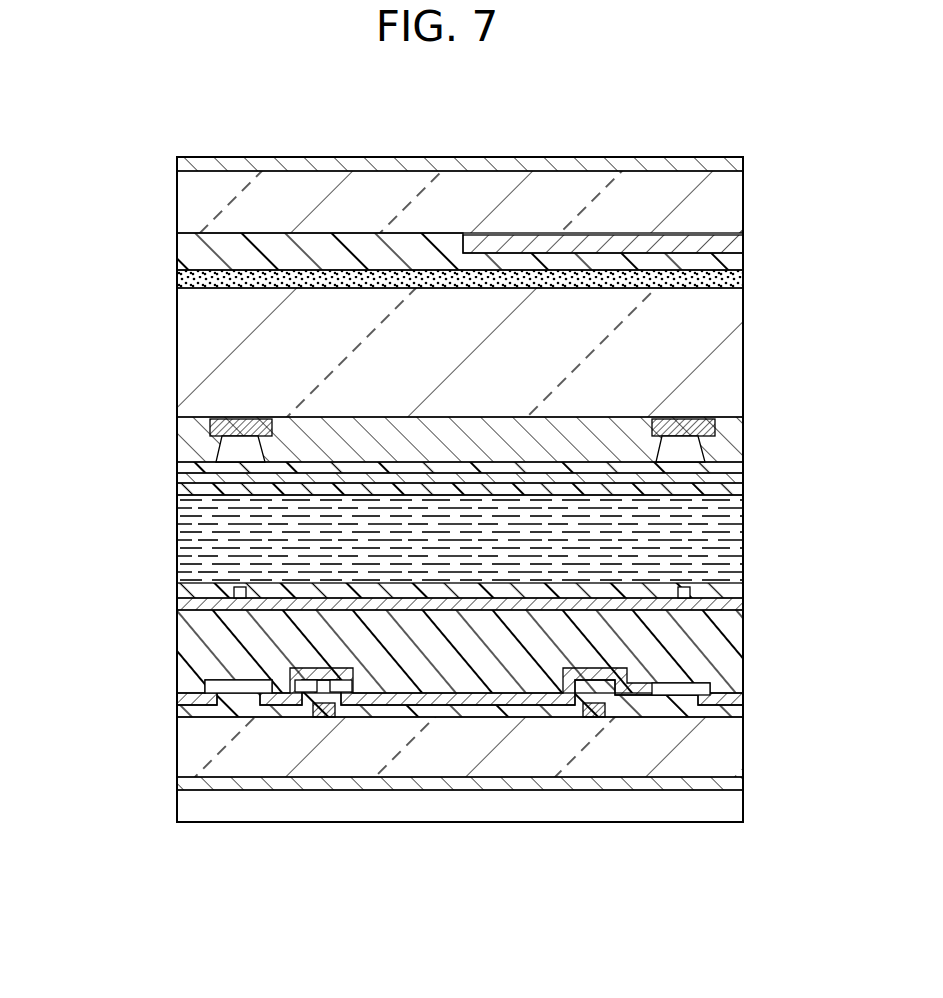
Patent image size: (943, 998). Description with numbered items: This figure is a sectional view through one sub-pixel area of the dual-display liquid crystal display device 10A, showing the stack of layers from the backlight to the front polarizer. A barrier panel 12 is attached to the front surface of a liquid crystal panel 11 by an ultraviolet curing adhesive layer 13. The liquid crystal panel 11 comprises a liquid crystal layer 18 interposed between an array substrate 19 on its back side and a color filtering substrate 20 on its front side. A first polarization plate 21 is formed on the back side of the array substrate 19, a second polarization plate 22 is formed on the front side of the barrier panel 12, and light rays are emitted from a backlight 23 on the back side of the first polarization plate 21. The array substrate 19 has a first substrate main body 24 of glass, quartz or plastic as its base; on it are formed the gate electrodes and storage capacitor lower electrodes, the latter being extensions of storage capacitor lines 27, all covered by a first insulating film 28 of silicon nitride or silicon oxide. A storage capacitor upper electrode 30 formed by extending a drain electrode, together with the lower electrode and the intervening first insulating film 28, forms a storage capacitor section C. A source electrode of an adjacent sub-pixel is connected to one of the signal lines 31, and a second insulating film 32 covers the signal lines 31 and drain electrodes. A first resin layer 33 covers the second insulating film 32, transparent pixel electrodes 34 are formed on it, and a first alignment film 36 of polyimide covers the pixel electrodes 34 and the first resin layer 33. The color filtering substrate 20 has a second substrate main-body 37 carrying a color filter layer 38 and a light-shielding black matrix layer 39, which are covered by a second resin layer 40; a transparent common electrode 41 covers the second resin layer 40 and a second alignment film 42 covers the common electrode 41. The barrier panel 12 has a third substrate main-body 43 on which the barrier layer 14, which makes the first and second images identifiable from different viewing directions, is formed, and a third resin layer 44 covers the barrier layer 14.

The dual-display liquid crystal display device 10A is at (358, 82).
The liquid crystal panel 11 is at (805, 780).
The barrier panel 12 is at (755, 278).
The ultraviolet curing adhesive layer 13 is at (177, 276).
The barrier layer 14 is at (621, 240).
The liquid crystal layer 18 is at (177, 552).
The array substrate 19 is at (755, 780).
The color filtering substrate 20 is at (755, 495).
The first polarization plate 21 is at (177, 783).
The second polarization plate 22 is at (177, 164).
The backlight 23 is at (177, 808).
The first substrate main body 24 is at (187, 742).
The storage capacitor line 27 is at (330, 707).
The first insulating film 28 is at (372, 700).
The storage capacitor upper electrode 30 is at (300, 702).
The signal line 31 is at (233, 702).
The second insulating film 32 is at (177, 690).
The first resin layer 33 is at (177, 640).
The pixel electrode 34 is at (524, 608).
The first alignment film 36 is at (177, 590).
The second substrate main-body 37 is at (186, 316).
The color filter layer 38 is at (370, 420).
The black matrix layer 39 is at (235, 418).
The second resin layer 40 is at (177, 466).
The common electrode 41 is at (177, 479).
The second alignment film 42 is at (177, 492).
The third substrate main-body 43 is at (178, 192).
The third resin layer 44 is at (177, 250).
The storage capacitor section C is at (398, 940).